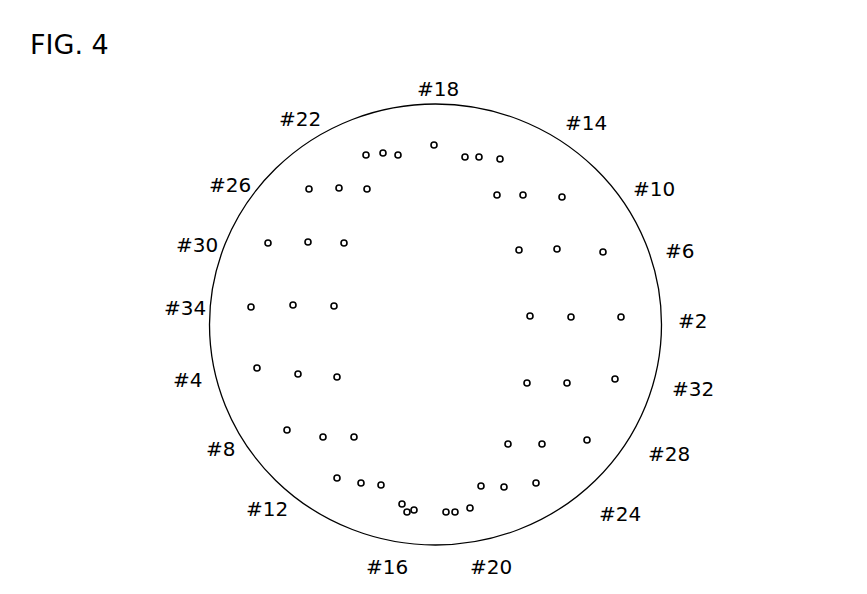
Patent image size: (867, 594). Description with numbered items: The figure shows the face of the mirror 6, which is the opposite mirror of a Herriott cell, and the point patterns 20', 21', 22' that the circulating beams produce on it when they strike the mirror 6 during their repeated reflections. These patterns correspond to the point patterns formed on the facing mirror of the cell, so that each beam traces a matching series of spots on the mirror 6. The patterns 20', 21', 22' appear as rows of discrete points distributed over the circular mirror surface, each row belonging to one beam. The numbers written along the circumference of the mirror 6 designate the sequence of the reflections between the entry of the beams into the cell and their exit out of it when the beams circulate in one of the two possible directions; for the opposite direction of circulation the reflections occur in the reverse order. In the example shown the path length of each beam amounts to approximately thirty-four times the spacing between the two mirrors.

The mirror 6 is at (738, 210).
The point pattern 20' is at (438, 271).
The point pattern 21' is at (436, 334).
The point pattern 22' is at (468, 418).